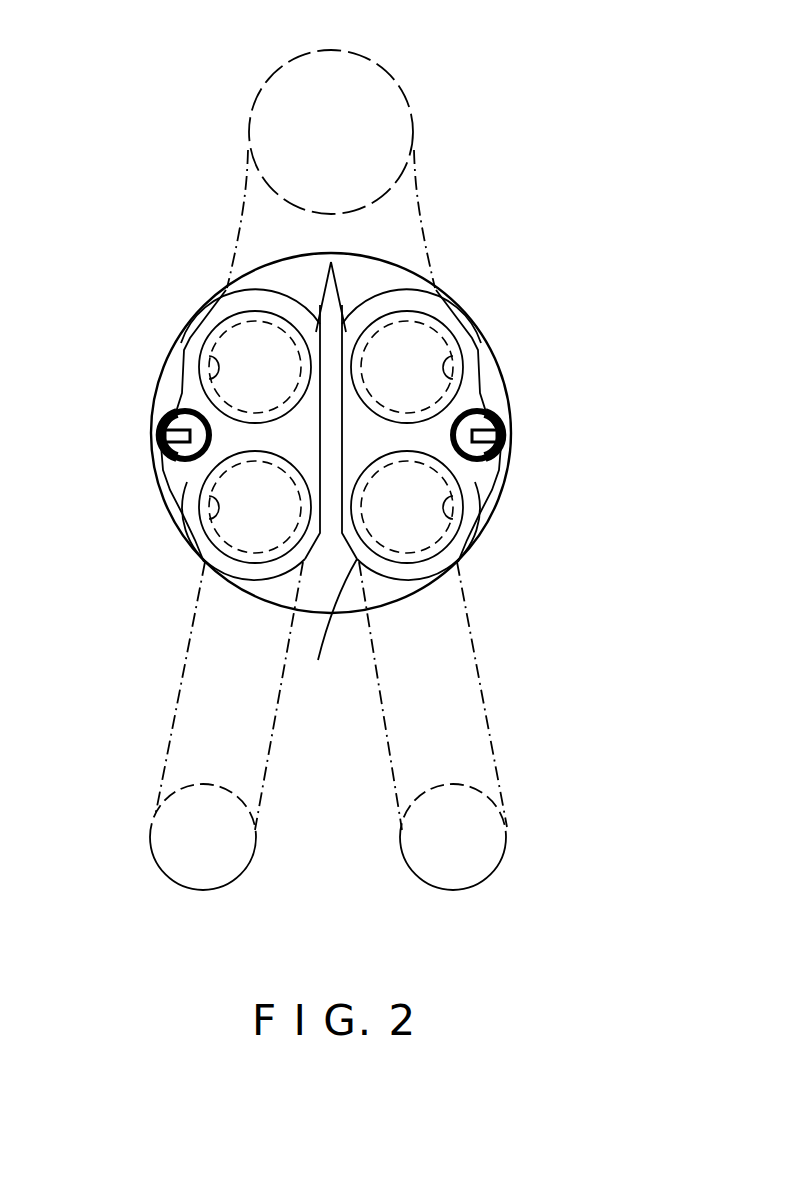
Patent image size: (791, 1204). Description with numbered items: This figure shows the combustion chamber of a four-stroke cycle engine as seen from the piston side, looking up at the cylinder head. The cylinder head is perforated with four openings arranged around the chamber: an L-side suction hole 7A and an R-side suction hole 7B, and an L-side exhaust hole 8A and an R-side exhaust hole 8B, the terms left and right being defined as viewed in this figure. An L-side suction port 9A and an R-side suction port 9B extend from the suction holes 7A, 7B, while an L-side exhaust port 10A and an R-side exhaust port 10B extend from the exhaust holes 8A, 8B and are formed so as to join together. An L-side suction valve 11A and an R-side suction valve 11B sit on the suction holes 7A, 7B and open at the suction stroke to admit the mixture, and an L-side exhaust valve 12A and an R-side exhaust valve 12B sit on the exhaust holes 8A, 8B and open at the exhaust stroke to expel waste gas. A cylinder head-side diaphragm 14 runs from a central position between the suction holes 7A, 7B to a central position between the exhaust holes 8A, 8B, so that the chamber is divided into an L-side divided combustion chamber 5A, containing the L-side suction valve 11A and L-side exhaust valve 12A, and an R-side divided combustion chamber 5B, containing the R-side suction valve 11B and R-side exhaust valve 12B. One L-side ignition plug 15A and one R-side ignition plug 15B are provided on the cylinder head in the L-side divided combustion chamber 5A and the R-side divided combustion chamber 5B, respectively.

The L-side divided combustion chamber 5A is at (314, 451).
The R-side divided combustion chamber 5B is at (379, 451).
The L-side suction hole 7A is at (209, 519).
The R-side suction hole 7B is at (458, 510).
The L-side exhaust hole 8A is at (212, 366).
The R-side exhaust hole 8B is at (456, 368).
The L-side suction port 9A is at (193, 645).
The R-side suction port 9B is at (477, 692).
The L-side exhaust port 10A is at (240, 230).
The R-side exhaust port 10B is at (420, 211).
The L-side suction valve 11A is at (183, 476).
The R-side suction valve 11B is at (482, 474).
The L-side exhaust valve 12A is at (183, 388).
The R-side exhaust valve 12B is at (455, 336).
The cylinder head-side diaphragm 14 is at (332, 629).
The L-side ignition plug 15A is at (160, 436).
The R-side ignition plug 15B is at (497, 418).